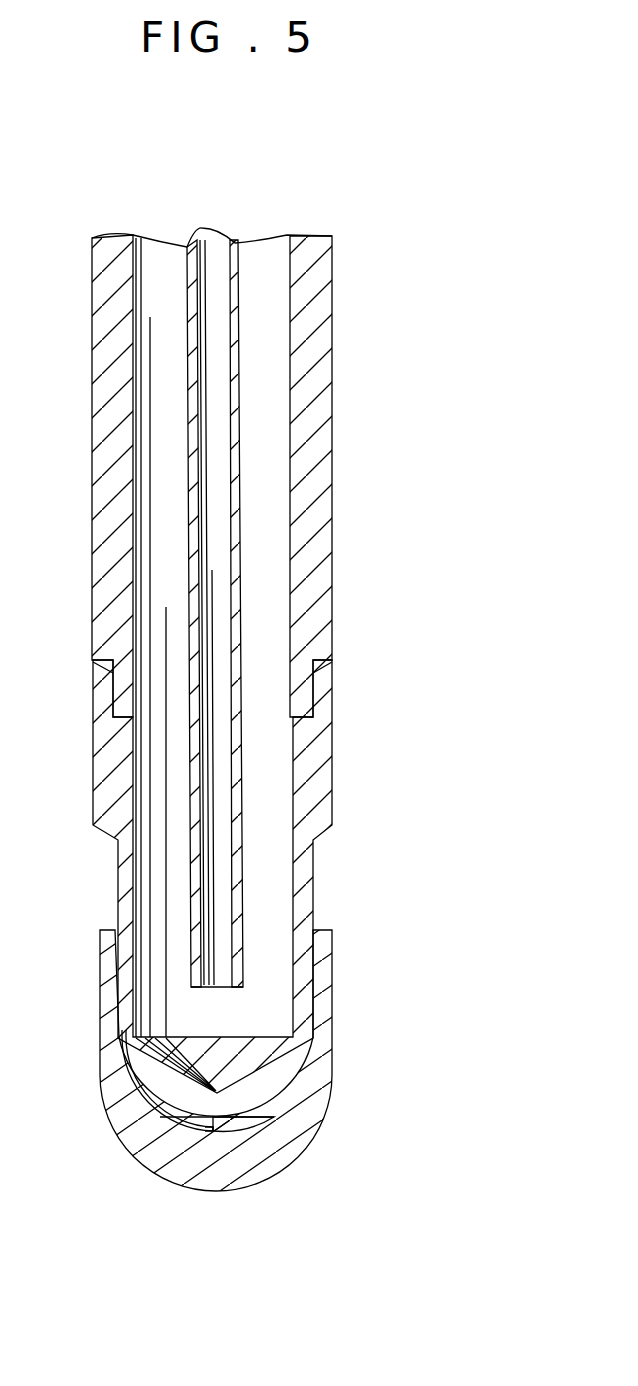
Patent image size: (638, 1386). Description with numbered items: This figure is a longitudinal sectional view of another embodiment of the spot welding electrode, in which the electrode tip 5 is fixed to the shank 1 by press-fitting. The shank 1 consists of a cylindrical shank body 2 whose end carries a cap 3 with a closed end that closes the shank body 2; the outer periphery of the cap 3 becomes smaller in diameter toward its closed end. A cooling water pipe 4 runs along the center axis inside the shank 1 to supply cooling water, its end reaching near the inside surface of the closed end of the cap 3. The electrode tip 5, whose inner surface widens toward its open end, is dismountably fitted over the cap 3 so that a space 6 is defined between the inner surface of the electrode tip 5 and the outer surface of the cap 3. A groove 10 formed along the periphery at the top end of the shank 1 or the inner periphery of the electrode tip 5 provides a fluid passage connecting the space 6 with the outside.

The shank 1 is at (350, 325).
The shank body 2 is at (333, 485).
The cap 3 is at (334, 760).
The cooling water pipe 4 is at (240, 275).
The electrode tip 5 is at (270, 1186).
The space 6 is at (231, 1120).
The groove 10 is at (201, 1137).